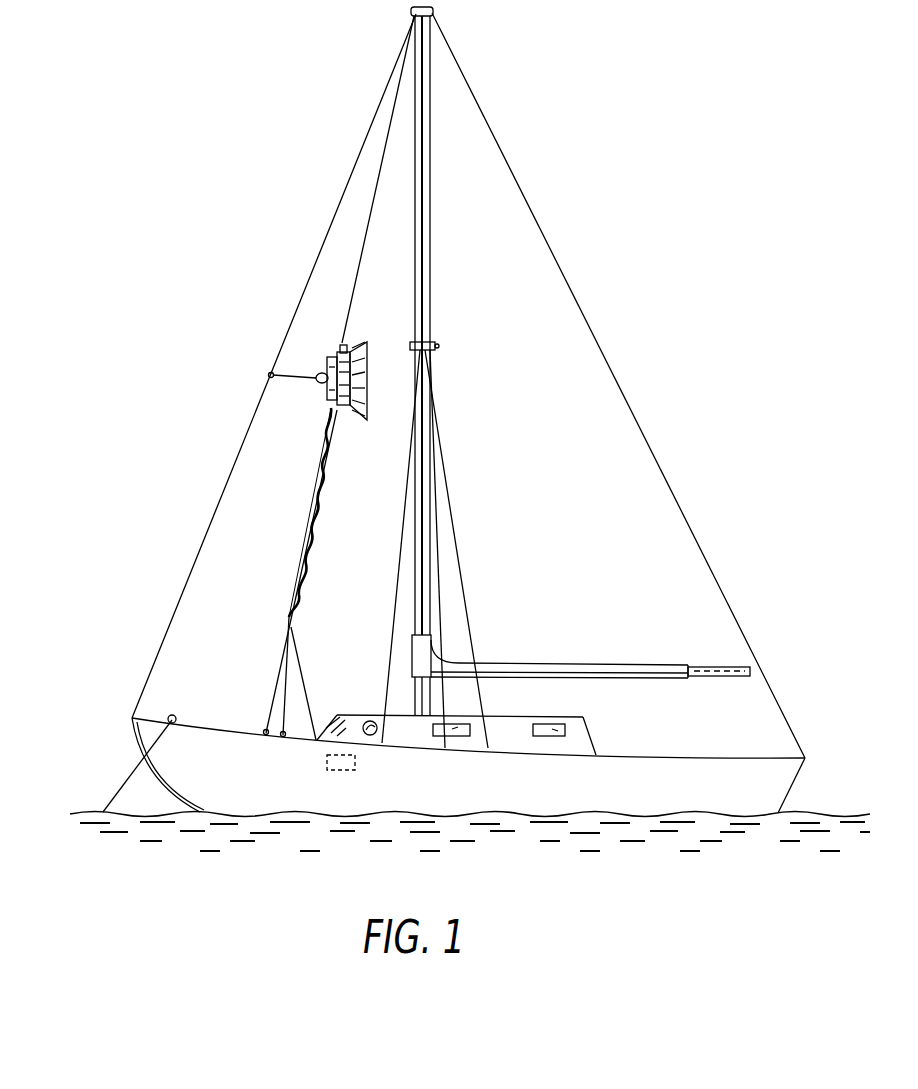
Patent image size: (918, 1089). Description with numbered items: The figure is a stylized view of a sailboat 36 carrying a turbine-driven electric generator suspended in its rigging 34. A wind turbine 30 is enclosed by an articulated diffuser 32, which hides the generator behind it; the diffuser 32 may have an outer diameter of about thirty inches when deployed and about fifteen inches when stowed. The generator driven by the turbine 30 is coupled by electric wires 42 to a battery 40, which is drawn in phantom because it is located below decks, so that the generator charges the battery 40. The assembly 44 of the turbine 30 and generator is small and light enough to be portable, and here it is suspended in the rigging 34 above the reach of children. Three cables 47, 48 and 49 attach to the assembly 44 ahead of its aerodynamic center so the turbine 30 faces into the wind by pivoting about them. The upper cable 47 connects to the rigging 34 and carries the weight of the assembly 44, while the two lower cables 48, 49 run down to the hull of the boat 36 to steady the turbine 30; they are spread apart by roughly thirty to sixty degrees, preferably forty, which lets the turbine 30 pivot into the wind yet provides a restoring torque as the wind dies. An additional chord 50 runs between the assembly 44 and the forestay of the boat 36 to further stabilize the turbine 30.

The wind turbine 30 is at (330, 356).
The articulated diffuser 32 is at (365, 343).
The rigging 34 is at (331, 226).
The sailboat 36 is at (112, 736).
The battery 40 is at (355, 770).
The electric wires 42 is at (304, 690).
The assembly 44 is at (355, 430).
The upper cable 47 is at (369, 223).
The lower cable 48 is at (280, 666).
The lower cable 49 is at (302, 629).
The additional chord 50 is at (296, 382).